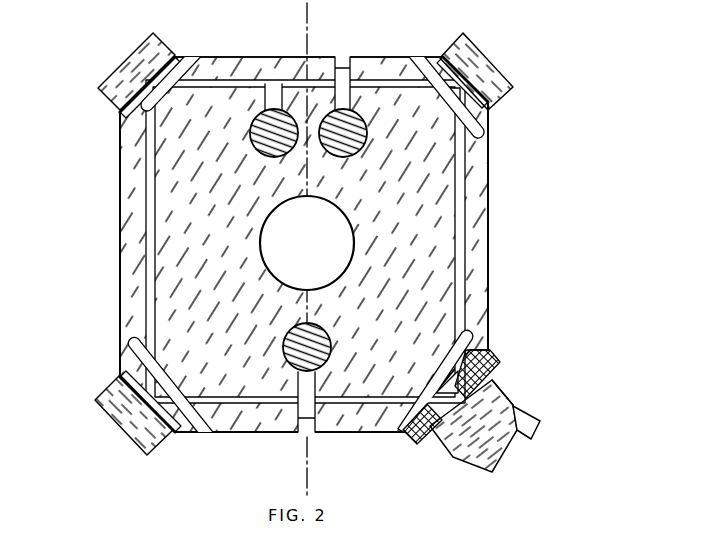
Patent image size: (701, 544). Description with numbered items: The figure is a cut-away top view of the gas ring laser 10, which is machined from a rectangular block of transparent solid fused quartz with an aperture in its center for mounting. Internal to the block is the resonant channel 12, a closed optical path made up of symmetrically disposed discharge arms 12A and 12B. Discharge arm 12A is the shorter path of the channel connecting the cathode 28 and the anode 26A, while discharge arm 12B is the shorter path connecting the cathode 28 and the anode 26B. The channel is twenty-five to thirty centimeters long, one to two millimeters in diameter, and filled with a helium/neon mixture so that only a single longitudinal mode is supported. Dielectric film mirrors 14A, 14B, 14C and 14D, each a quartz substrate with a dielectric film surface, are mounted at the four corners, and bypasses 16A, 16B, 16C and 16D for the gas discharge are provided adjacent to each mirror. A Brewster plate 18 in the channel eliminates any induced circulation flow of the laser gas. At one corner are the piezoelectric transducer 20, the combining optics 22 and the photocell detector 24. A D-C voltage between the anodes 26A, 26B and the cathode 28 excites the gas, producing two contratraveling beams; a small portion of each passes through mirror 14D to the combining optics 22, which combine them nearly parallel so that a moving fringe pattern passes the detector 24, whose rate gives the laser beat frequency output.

The laser 10 is at (383, 254).
The resonant channel 12 is at (280, 403).
The discharge arm 12A is at (152, 230).
The discharge arm 12B is at (461, 259).
The dielectric film mirror 14A is at (504, 98).
The dielectric film mirror 14B is at (108, 95).
The dielectric film mirror 14C is at (108, 388).
The dielectric film mirror 14D is at (492, 380).
The bypass 16A is at (478, 135).
The bypass 16B is at (146, 129).
The bypass 16C is at (136, 346).
The bypass 16D is at (470, 337).
The Brewster plate 18 is at (298, 50).
The piezoelectric transducer 20 is at (415, 440).
The combining optics 22 is at (512, 402).
The photocell detector 24 is at (528, 422).
The anode 26A is at (359, 141).
The anode 26B is at (288, 143).
The cathode 28 is at (323, 342).